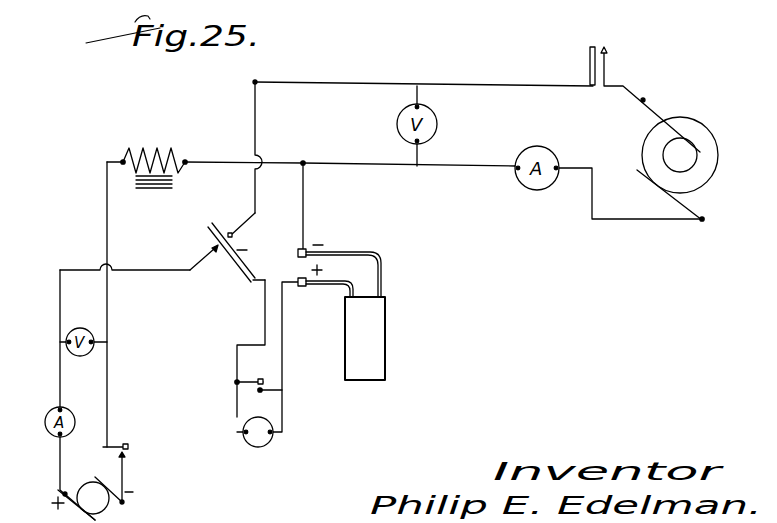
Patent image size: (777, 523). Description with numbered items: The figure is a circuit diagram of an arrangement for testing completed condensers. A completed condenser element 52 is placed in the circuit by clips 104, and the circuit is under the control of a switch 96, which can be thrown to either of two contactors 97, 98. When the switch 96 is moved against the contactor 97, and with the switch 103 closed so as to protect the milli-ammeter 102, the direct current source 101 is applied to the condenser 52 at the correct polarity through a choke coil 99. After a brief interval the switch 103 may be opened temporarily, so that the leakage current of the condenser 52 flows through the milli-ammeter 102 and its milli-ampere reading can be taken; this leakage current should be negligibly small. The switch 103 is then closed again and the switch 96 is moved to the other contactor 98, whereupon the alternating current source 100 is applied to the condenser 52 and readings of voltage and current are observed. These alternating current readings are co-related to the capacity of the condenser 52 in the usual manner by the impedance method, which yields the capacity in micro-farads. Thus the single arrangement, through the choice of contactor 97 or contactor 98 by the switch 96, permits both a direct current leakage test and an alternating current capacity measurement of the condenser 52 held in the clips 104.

The condenser element 52 is at (372, 328).
The switch 96 is at (235, 267).
The contactor 97 is at (203, 270).
The contactor 98 is at (237, 218).
The choke coil 99 is at (154, 182).
The alternating current source 100 is at (700, 180).
The direct current source 101 is at (108, 511).
The milli-ammeter 102 is at (250, 447).
The switch 103 is at (268, 386).
The clips 104 is at (327, 250).